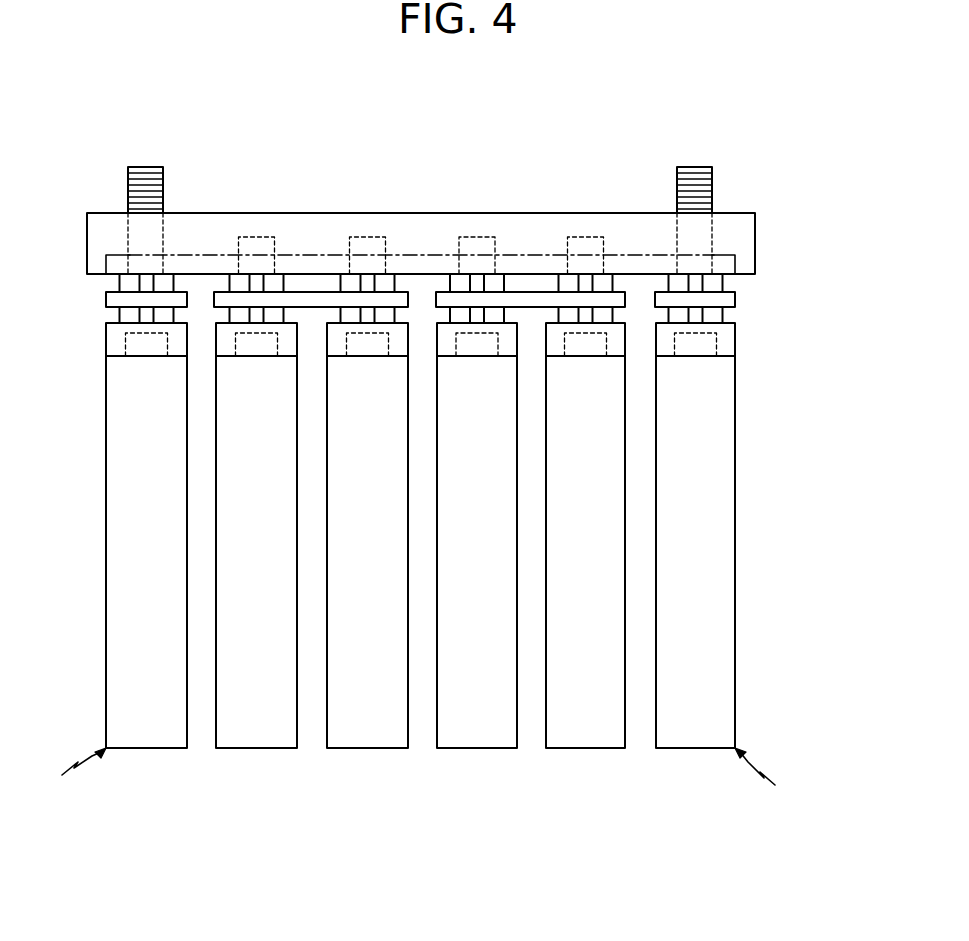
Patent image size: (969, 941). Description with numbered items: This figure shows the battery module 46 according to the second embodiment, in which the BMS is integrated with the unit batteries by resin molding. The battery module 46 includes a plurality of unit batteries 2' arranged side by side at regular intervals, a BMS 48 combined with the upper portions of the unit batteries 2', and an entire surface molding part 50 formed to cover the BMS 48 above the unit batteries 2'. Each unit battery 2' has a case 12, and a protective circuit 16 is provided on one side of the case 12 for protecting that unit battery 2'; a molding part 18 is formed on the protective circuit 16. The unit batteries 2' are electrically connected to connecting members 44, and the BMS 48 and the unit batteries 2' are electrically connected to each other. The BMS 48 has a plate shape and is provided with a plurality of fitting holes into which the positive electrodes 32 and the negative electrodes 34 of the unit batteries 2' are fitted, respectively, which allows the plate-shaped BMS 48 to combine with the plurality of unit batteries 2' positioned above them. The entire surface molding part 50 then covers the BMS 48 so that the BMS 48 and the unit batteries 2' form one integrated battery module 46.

The unit battery 2' is at (418, 782).
The case 12 is at (120, 558).
The protective circuit 16 is at (125, 342).
The molding part 18 is at (735, 333).
The positive electrode 32 is at (144, 167).
The negative electrode 34 is at (693, 167).
The connecting member 44 is at (528, 296).
The battery module 46 is at (792, 425).
The BMS 48 is at (312, 255).
The entire surface molding part 50 is at (755, 235).